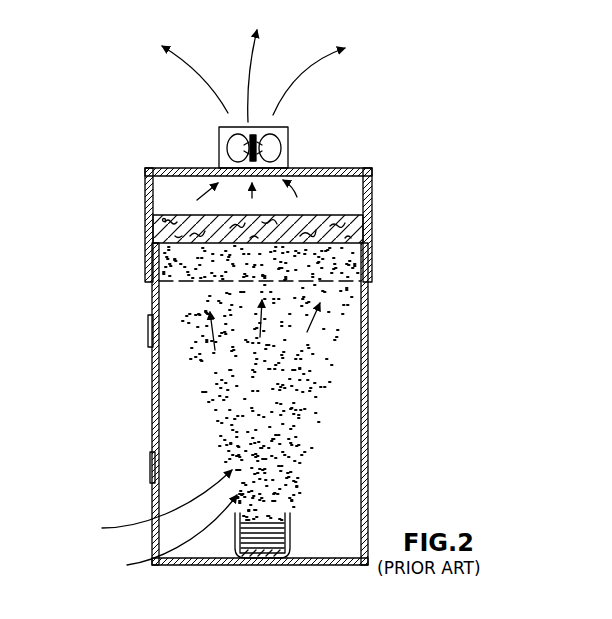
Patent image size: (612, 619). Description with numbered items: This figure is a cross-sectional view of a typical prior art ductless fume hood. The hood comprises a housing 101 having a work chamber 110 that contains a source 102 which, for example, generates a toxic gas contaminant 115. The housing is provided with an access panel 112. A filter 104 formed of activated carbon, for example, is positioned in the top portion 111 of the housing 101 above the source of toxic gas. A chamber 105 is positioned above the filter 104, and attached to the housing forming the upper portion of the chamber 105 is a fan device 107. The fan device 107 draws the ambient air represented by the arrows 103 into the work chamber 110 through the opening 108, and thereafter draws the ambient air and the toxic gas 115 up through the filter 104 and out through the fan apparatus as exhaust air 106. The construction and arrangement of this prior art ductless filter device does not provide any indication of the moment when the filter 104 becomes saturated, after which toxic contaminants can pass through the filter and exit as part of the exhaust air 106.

The housing 101 is at (369, 452).
The source 102 is at (285, 535).
The ambient air 103 is at (134, 527).
The filter 104 is at (153, 231).
The chamber 105 is at (347, 203).
The exhaust air 106 is at (205, 84).
The fan device 107 is at (288, 152).
The opening 108 is at (152, 507).
The work chamber 110 is at (347, 497).
The top portion 111 is at (372, 243).
The access panel 112 is at (150, 367).
The toxic gas contaminant 115 is at (275, 405).